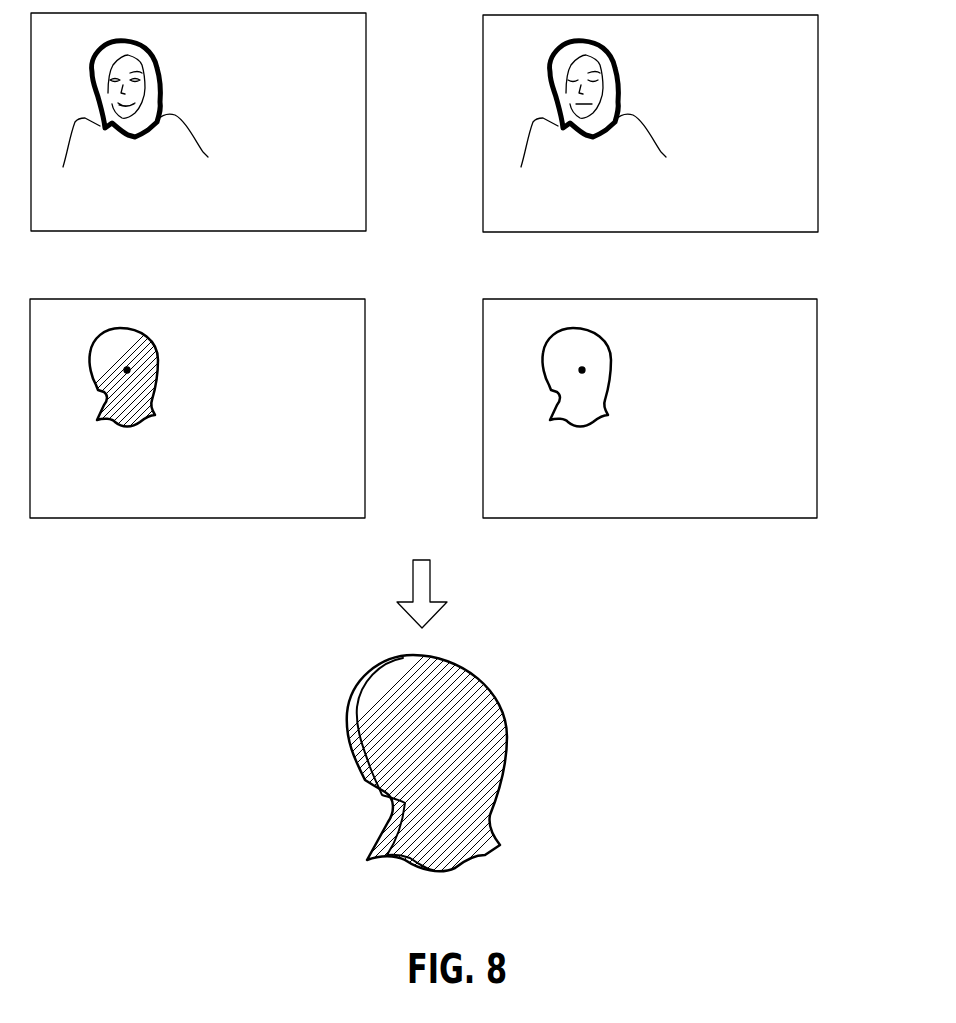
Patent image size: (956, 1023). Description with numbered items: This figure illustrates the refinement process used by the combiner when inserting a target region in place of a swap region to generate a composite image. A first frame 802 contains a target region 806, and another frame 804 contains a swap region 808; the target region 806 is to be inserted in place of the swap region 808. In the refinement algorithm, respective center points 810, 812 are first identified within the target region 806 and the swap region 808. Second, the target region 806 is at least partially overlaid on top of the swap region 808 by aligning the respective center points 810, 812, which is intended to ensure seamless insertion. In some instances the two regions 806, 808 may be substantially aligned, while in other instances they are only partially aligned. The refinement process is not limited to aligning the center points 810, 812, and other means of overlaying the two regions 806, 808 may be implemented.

The first frame 802 is at (366, 63).
The another frame 804 is at (818, 72).
The target region 806 is at (152, 340).
The swap region 808 is at (610, 345).
The center point 810 is at (127, 370).
The center point 812 is at (582, 370).